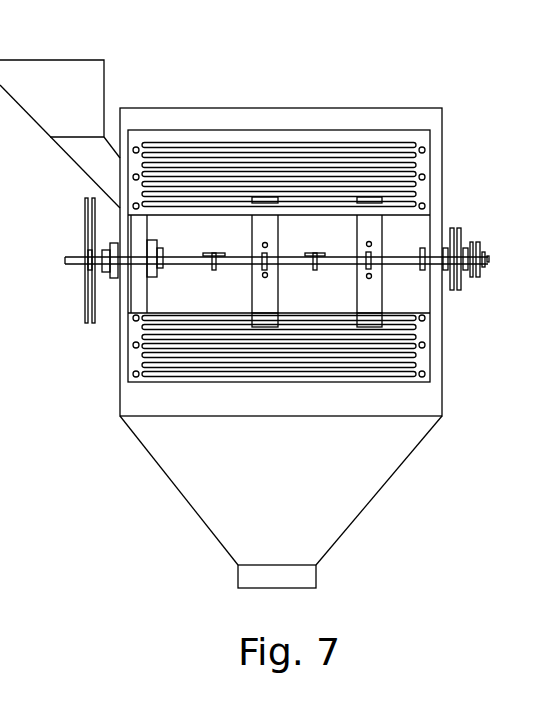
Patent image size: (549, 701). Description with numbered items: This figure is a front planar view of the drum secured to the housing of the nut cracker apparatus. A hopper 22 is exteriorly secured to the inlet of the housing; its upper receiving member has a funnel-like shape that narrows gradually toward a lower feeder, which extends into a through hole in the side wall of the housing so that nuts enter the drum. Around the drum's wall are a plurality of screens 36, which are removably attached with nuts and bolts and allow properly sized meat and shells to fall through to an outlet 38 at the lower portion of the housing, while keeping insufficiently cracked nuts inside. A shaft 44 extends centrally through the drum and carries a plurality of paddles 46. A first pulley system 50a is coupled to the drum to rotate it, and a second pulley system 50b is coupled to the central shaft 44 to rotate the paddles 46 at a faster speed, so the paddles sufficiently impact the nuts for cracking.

The hopper 22 is at (88, 67).
The screens 36 is at (322, 168).
The outlet 38 is at (312, 578).
The shaft 44 is at (402, 260).
The paddles 46 is at (256, 291).
The first pulley system 50a is at (88, 213).
The second pulley system 50b is at (477, 242).